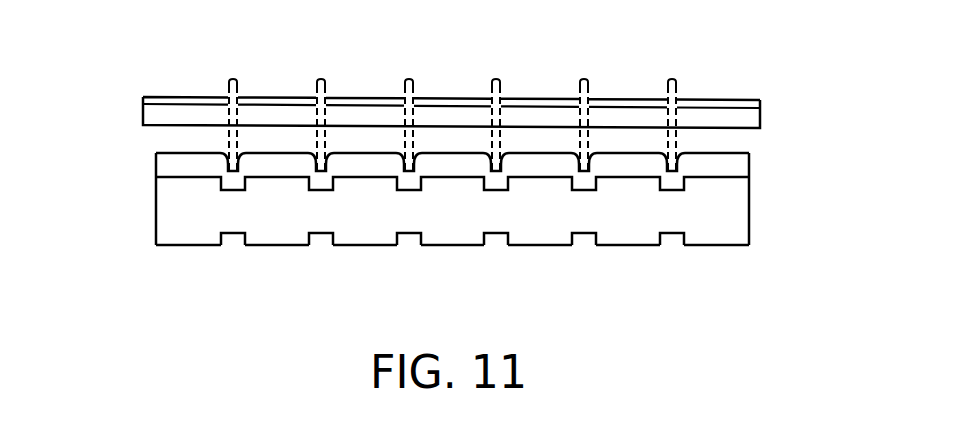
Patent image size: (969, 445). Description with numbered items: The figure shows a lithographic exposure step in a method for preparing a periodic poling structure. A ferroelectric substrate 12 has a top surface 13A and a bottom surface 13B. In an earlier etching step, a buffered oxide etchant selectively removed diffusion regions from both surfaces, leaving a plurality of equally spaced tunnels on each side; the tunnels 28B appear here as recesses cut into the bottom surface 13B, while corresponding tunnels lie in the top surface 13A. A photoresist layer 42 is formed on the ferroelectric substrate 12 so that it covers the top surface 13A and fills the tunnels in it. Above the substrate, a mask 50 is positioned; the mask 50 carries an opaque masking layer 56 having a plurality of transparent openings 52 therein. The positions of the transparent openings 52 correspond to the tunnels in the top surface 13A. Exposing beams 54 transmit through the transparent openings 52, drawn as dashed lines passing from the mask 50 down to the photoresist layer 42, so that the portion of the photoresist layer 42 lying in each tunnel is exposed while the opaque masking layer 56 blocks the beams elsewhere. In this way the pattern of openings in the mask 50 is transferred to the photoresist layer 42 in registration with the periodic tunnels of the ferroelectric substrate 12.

The ferroelectric substrate 12 is at (467, 223).
The top surface 13A is at (176, 177).
The bottom surface 13B is at (540, 247).
The tunnels 28B is at (672, 247).
The photoresist layer 42 is at (743, 168).
The mask 50 is at (759, 118).
The transparent openings 52 is at (677, 93).
The exposing beams 54 is at (500, 95).
The opaque masking layer 56 is at (752, 103).